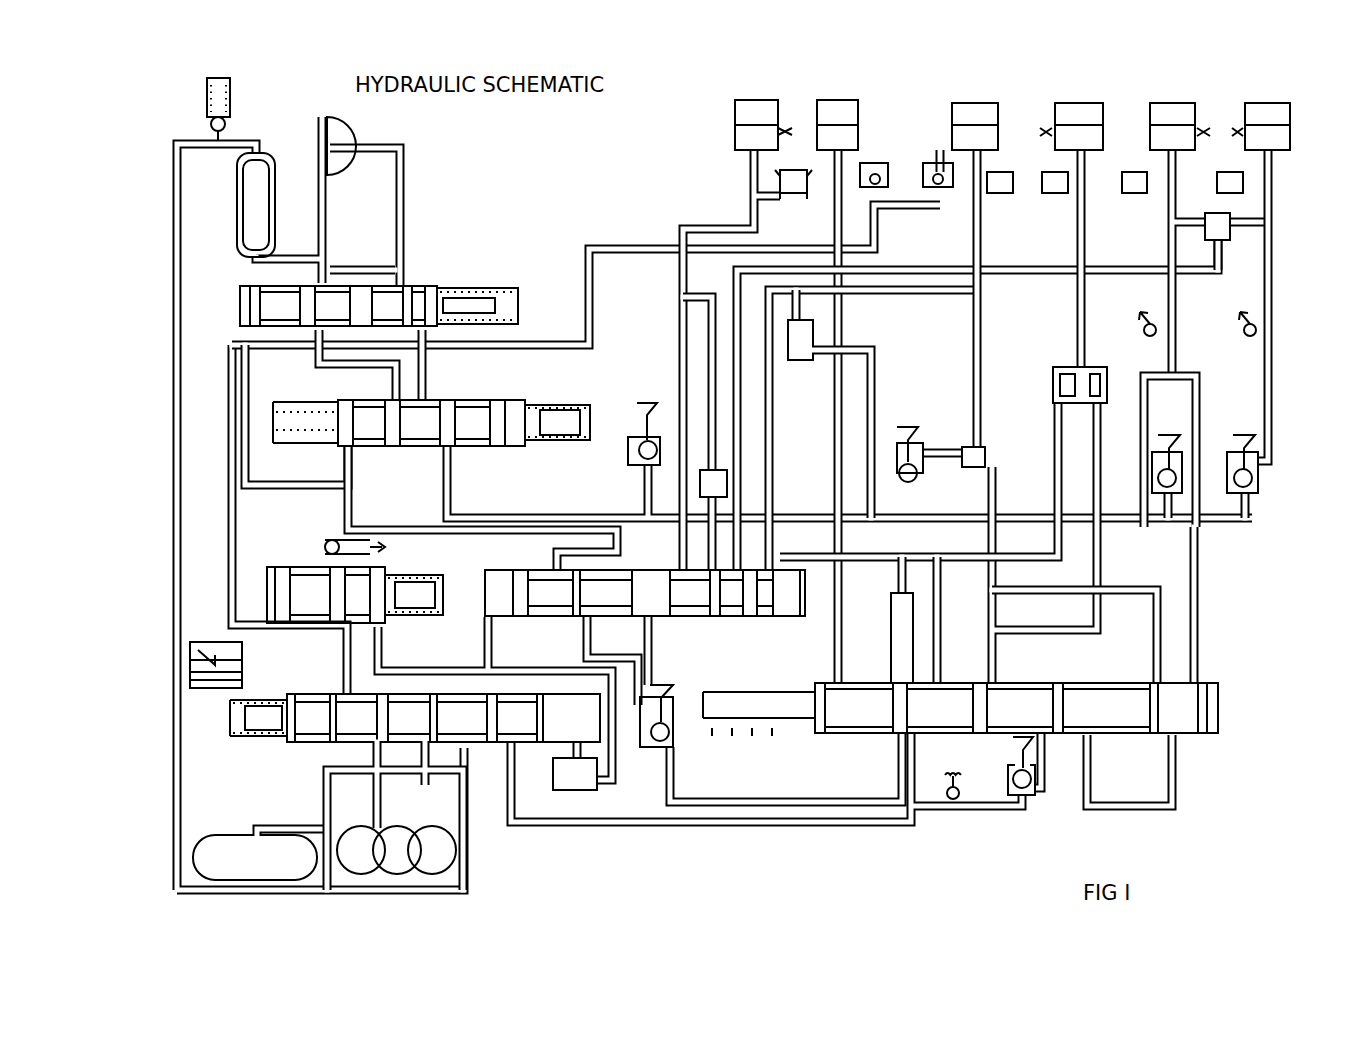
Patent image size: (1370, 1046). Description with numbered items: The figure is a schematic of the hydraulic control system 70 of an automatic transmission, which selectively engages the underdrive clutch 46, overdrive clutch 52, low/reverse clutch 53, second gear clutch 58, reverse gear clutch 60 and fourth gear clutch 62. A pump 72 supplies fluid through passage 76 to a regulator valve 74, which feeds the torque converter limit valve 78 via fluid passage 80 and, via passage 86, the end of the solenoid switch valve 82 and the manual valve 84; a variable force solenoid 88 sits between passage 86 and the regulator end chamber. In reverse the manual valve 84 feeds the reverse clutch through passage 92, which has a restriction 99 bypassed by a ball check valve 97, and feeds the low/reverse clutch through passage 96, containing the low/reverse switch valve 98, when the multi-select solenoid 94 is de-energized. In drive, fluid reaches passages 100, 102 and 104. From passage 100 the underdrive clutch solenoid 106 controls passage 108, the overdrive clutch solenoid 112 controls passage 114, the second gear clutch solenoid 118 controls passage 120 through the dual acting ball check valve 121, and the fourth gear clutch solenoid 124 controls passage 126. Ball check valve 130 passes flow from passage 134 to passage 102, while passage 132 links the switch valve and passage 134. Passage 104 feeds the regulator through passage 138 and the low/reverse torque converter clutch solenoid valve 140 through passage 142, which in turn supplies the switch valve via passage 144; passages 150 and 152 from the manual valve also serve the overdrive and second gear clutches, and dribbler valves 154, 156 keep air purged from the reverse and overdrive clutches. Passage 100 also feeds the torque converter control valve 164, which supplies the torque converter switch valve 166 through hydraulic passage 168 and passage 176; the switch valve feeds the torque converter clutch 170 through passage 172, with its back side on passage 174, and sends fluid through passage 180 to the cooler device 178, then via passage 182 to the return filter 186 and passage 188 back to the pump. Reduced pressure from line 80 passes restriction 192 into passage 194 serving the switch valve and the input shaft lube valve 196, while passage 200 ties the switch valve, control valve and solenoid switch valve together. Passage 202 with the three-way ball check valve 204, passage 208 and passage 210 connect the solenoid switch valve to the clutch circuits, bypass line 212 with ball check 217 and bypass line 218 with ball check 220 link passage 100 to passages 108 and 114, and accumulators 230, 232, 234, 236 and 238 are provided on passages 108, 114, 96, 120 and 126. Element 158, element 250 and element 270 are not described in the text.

The underdrive clutch 46 is at (735, 113).
The overdrive clutch 52 is at (998, 114).
The low/reverse clutch 53 is at (1103, 113).
The second gear clutch 58 is at (1195, 110).
The reverse gear clutch 60 is at (858, 113).
The fourth gear clutch 62 is at (1290, 116).
The hydraulic control system 70 is at (645, 110).
The pump 72 is at (380, 843).
The regulator valve 74 is at (462, 733).
The passage 76 is at (375, 780).
The torque converter limit valve 78 is at (300, 572).
The fluid passage 80 is at (350, 655).
The solenoid switch valve 82 is at (660, 622).
The manual valve 84 is at (1030, 700).
The passage 86 is at (400, 670).
The variable force solenoid 88 is at (560, 790).
The passage 92 is at (841, 575).
The multi-select solenoid 94 is at (1035, 797).
The passage 96 is at (1077, 303).
The ball check valve 97 is at (800, 360).
The low/reverse switch valve 98 is at (1105, 365).
The restriction 99 is at (855, 354).
The passage 100 is at (935, 572).
The passage 102 is at (900, 645).
The passage 104 is at (830, 828).
The underdrive clutch solenoid 106 is at (628, 465).
The passage 108 is at (718, 228).
The overdrive clutch solenoid 112 is at (897, 452).
The passage 114 is at (983, 252).
The second gear clutch solenoid 118 is at (1155, 475).
The passage 120 is at (1167, 253).
The dual acting ball check valve 121 is at (1188, 378).
The fourth gear clutch solenoid 124 is at (1258, 490).
The passage 126 is at (1275, 253).
The ball check valve 130 is at (890, 615).
The passage 132 is at (550, 551).
The passage 134 is at (1055, 480).
The passage 138 is at (546, 832).
The low/reverse torque converter clutch solenoid valve 140 is at (662, 750).
The passage 142 is at (672, 786).
The passage 144 is at (583, 650).
The passage 150 is at (1130, 585).
The passage 152 is at (1200, 605).
The dribbler valve 154 is at (872, 168).
The dribbler valve 156 is at (940, 160).
The passage 158 is at (615, 248).
The torque converter control valve 164 is at (470, 430).
The torque converter switch valve 166 is at (425, 297).
The hydraulic passage 168 is at (425, 392).
The torque converter clutch 170 is at (366, 128).
The passage 172 is at (403, 172).
The passage 174 is at (320, 183).
The passage 176 is at (316, 357).
The cooler device 178 is at (243, 205).
The passage 180 is at (340, 262).
The passage 182 is at (178, 270).
The return filter 186 is at (228, 655).
The passage 188 is at (198, 885).
The restriction 192 is at (290, 625).
The passage 194 is at (232, 570).
The input shaft lube valve 196 is at (345, 538).
The passage 200 is at (366, 522).
The passage 202 is at (895, 268).
The three-way ball check valve 204 is at (1230, 222).
The passage 208 is at (770, 400).
The passage 210 is at (680, 358).
The bypass line 212 is at (680, 294).
The ball check 217 is at (727, 483).
The bypass line 218 is at (872, 375).
The ball check 220 is at (888, 292).
The accumulator 230 is at (795, 170).
The accumulator 232 is at (1000, 172).
The accumulator 234 is at (1042, 190).
The accumulator 236 is at (1130, 190).
The accumulator 238 is at (1243, 182).
The accumulator 250 is at (1177, 778).
The orifice 270 is at (980, 450).